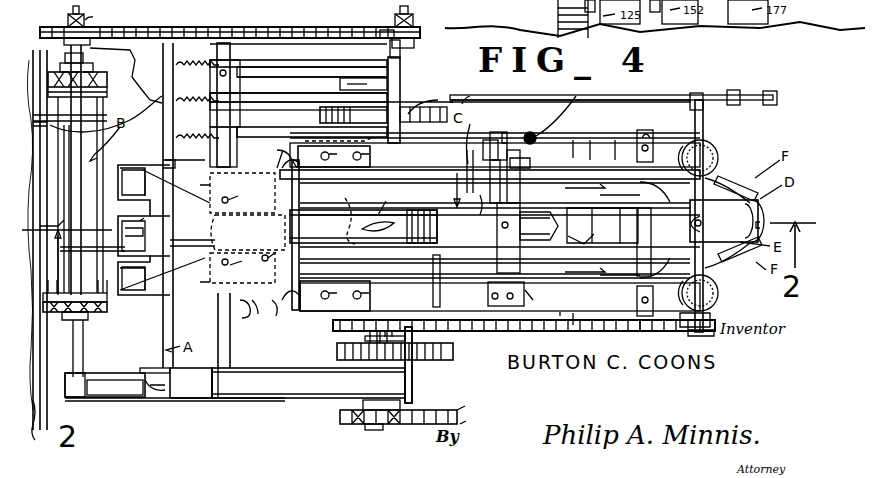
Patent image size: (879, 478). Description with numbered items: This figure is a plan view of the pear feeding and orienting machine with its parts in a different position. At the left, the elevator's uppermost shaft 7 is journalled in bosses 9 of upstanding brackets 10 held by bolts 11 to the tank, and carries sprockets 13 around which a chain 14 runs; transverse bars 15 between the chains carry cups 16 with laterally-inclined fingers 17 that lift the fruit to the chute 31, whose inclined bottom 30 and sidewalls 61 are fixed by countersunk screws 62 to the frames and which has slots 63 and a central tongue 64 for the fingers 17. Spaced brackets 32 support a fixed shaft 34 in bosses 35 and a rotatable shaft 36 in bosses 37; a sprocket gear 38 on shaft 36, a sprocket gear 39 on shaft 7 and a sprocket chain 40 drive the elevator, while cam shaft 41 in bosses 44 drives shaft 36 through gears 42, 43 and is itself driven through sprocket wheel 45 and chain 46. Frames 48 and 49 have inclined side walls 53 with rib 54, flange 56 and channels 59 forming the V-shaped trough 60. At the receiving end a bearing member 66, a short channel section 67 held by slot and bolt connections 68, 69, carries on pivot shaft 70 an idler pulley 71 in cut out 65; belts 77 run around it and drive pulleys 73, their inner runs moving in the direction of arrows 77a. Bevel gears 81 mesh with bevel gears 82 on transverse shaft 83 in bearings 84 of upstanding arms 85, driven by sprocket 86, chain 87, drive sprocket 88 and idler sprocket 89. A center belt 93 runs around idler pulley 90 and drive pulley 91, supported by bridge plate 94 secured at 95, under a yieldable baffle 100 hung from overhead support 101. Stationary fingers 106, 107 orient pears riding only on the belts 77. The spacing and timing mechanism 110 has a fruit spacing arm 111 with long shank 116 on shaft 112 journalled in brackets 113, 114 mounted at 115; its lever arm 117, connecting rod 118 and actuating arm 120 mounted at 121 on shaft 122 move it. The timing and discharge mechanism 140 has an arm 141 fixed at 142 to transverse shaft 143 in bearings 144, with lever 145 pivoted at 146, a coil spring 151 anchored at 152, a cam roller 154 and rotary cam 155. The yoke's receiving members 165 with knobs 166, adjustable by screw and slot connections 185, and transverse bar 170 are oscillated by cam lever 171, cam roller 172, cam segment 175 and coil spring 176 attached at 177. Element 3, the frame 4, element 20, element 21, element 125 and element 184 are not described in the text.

The base 3 is at (37, 420).
The frame upright 4 is at (46, 168).
The uppermost shaft 7 is at (76, 22).
The bosses 9 is at (90, 398).
The upstanding brackets 10 is at (118, 398).
The bolts 11 is at (162, 387).
The sprockets 13 is at (66, 68).
The chain 14 is at (91, 74).
The transverse bars 15 is at (80, 164).
The cup 16 is at (122, 251).
The laterally-inclined fingers 17 is at (131, 214).
The lever 20 is at (90, 228).
The link 21 is at (48, 226).
The inclined bottom 30 is at (153, 230).
The chute 31 is at (162, 165).
The brackets 32 is at (308, 383).
The fixed shaft 34 is at (204, 324).
The aligned bosses 35 is at (210, 402).
The shaft 36 is at (404, 60).
The aligned bosses 37 is at (414, 384).
The sprocket gear 38 is at (416, 20).
The sprocket gear 39 is at (94, 18).
The sprocket chain 40 is at (266, 26).
The cam shaft 41 is at (378, 24).
The gear 42 is at (452, 332).
The gear 43 is at (452, 356).
The bosses 44 is at (340, 410).
The sprocket wheel 45 is at (390, 426).
The chain 46 is at (464, 416).
The frame 48 is at (556, 322).
The frame 49 is at (592, 138).
The inclined side wall 53 is at (198, 232).
The rib or flange 54 is at (300, 183).
The flange 56 is at (495, 227).
The channel 59 is at (574, 139).
The V-shaped trough 60 is at (616, 138).
The sidewalls 61 is at (134, 110).
The countersunk screws 62 is at (243, 228).
The slots 63 is at (132, 229).
The central tongue 64 is at (170, 214).
The cut out portion 65 is at (249, 304).
The bearing member 66 is at (280, 340).
The short channel section 67 is at (372, 157).
The slot and bolt connection 68 is at (348, 153).
The slot and bolt connection 69 is at (366, 144).
The pivot shaft 70 is at (309, 143).
The idler pulley 71 is at (267, 316).
The drive pulley 73 is at (719, 159).
The belts 77 is at (462, 260).
The arrows 77a is at (576, 228).
The bevel gear 81 is at (713, 146).
The bevel gear 82 is at (653, 223).
The transverse shaft 83 is at (720, 321).
The bearings 84 is at (623, 235).
The upstanding arms 85 is at (660, 192).
The sprocket 86 is at (690, 331).
The chain 87 is at (648, 329).
The drive sprocket 88 is at (358, 336).
The idler sprocket 89 is at (353, 340).
The idler pulley 90 is at (215, 244).
The drive pulley 91 is at (410, 209).
The auxiliary center belt 93 is at (363, 226).
The bridge plate 94 is at (378, 210).
The securing point 95 is at (350, 214).
The yieldable baffle 100 is at (415, 229).
The overhead support 101 is at (268, 233).
The stationary finger 106 is at (451, 281).
The stationary finger 107 is at (478, 136).
The fruit spacing and timing mechanism 110 is at (516, 211).
The fruit spacing arm 111 is at (593, 225).
The shaft 112 is at (520, 152).
The upstanding bracket 113 is at (541, 297).
The upstanding bracket 114 is at (528, 164).
The mounting point 115 is at (470, 302).
The long shank 116 is at (538, 234).
The lever arm 117 is at (528, 131).
The connecting rod 118 is at (561, 108).
The actuating arm 120 is at (423, 121).
The mounting 121 is at (208, 150).
The shaft 122 is at (218, 56).
The spring 125 is at (180, 136).
The timing and discharge mechanism 140 is at (754, 207).
The inverted L-shaped arm 141 is at (762, 219).
The fixing point 142 is at (709, 215).
The transverse shaft 143 is at (694, 127).
The bearings 144 is at (731, 155).
The lever 145 is at (718, 92).
The pivot connection 146 is at (772, 93).
The coil spring 151 is at (298, 81).
The anchor 152 is at (178, 99).
The cam roller 154 is at (420, 100).
The rotary cam 155 is at (476, 93).
The pear receiving and supporting members 165 is at (760, 160).
The pear engaging knobs 166 is at (750, 225).
The transverse bar 170 is at (581, 237).
The cam lever 171 is at (316, 70).
The cam roller 172 is at (404, 78).
The cam segment 175 is at (346, 84).
The coil spring 176 is at (298, 55).
The attachment point 177 is at (164, 66).
The bar 184 is at (258, 134).
The screw and slot connection 185 is at (651, 136).